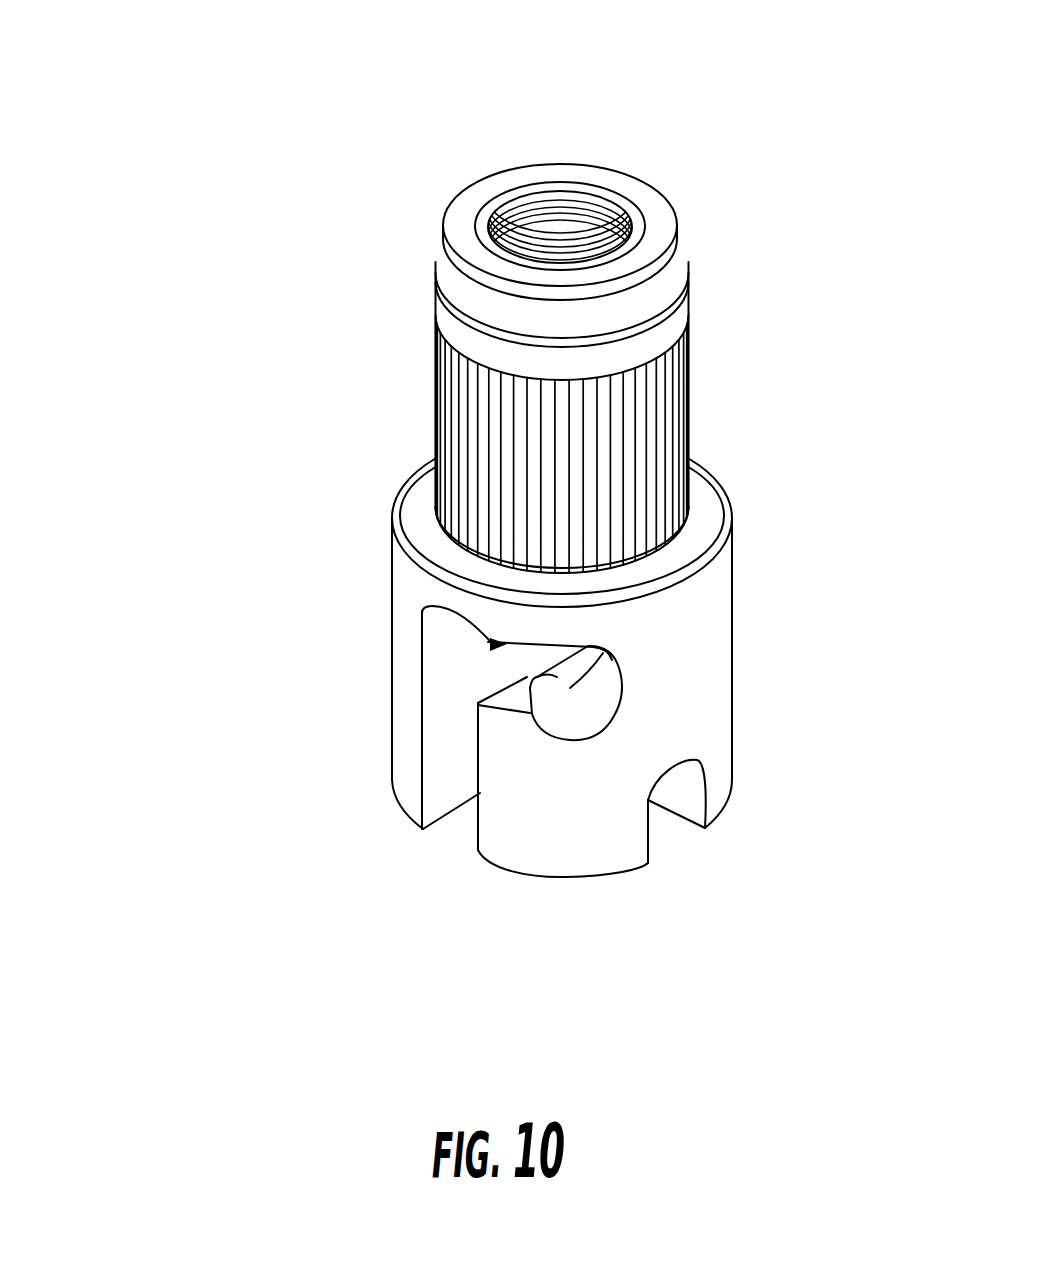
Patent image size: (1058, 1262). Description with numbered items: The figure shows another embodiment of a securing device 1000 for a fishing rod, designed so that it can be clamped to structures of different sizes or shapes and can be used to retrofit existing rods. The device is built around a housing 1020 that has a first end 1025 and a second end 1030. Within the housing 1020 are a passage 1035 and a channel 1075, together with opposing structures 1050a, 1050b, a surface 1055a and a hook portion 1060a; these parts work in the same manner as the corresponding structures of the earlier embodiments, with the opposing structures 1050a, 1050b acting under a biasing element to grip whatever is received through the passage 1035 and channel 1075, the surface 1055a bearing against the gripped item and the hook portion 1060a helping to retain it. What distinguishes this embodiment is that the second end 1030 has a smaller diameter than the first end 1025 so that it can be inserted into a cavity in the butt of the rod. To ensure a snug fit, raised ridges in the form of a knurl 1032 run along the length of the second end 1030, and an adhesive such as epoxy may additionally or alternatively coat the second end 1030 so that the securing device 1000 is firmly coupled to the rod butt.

The securing device 1000 is at (300, 82).
The second end 1030 is at (467, 162).
The knurl 1032 is at (690, 403).
The housing 1020 is at (787, 568).
The first end 1025 is at (734, 709).
The passage 1035 is at (583, 695).
The opposing structure 1050a is at (538, 877).
The opposing structure 1050b is at (396, 784).
The surface 1055a is at (616, 703).
The hook portion 1060a is at (520, 723).
The channel 1075 is at (440, 835).